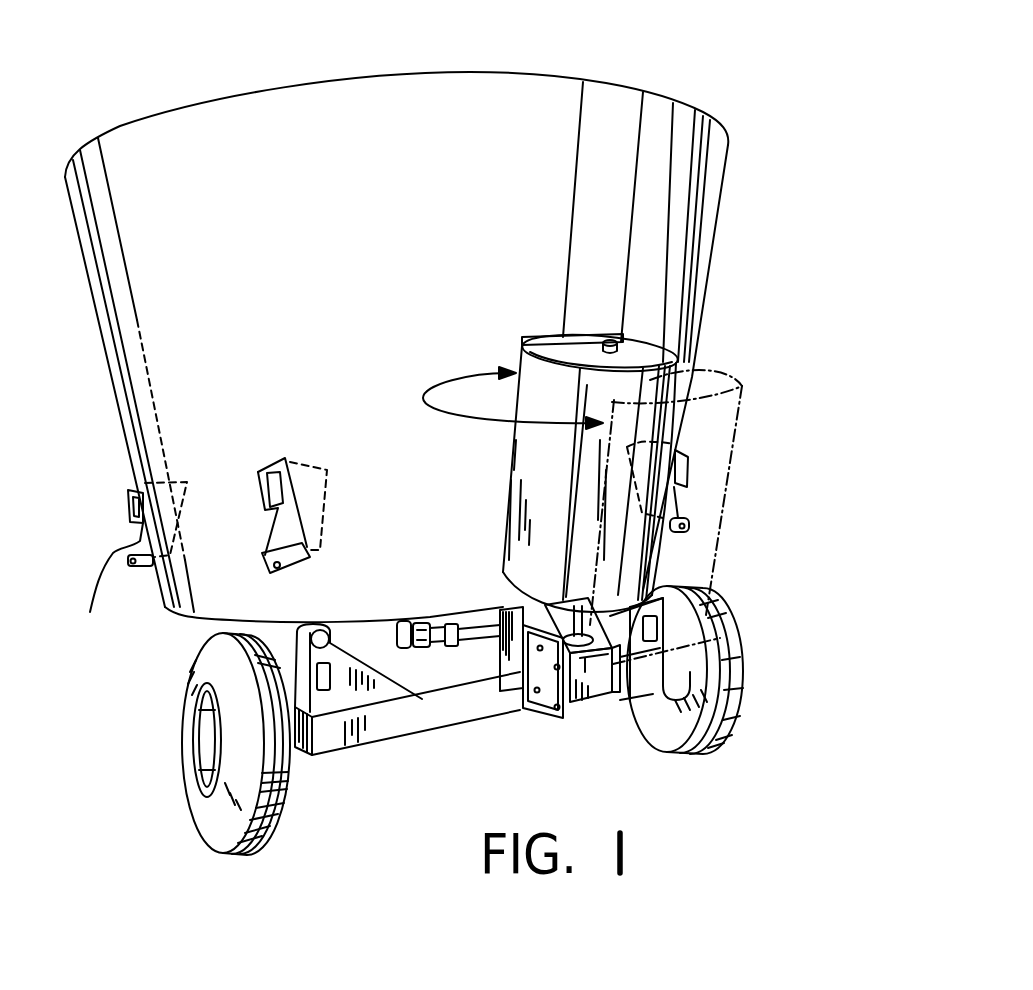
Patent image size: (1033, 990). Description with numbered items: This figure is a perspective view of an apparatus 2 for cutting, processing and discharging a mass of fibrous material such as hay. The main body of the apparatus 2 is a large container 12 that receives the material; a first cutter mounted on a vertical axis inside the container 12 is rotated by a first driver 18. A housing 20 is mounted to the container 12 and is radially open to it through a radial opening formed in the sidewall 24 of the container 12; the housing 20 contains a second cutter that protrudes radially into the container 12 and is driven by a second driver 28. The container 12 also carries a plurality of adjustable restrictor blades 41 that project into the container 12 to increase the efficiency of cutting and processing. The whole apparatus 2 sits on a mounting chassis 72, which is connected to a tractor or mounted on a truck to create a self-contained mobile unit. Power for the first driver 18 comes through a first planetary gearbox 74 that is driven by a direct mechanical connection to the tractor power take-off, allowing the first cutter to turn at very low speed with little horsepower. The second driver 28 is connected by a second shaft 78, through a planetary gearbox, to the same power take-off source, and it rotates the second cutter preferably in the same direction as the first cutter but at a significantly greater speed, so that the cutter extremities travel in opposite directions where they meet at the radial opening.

The apparatus 2 is at (799, 227).
The container 12 is at (365, 299).
The sidewall 24 is at (585, 313).
The housing 20 is at (653, 382).
The adjustable restrictor blades 41 is at (283, 558).
The first driver 18 is at (412, 643).
The first planetary gearbox 74 is at (440, 647).
The second shaft 78 is at (505, 645).
The second driver 28 is at (598, 681).
The mounting chassis 72 is at (327, 733).